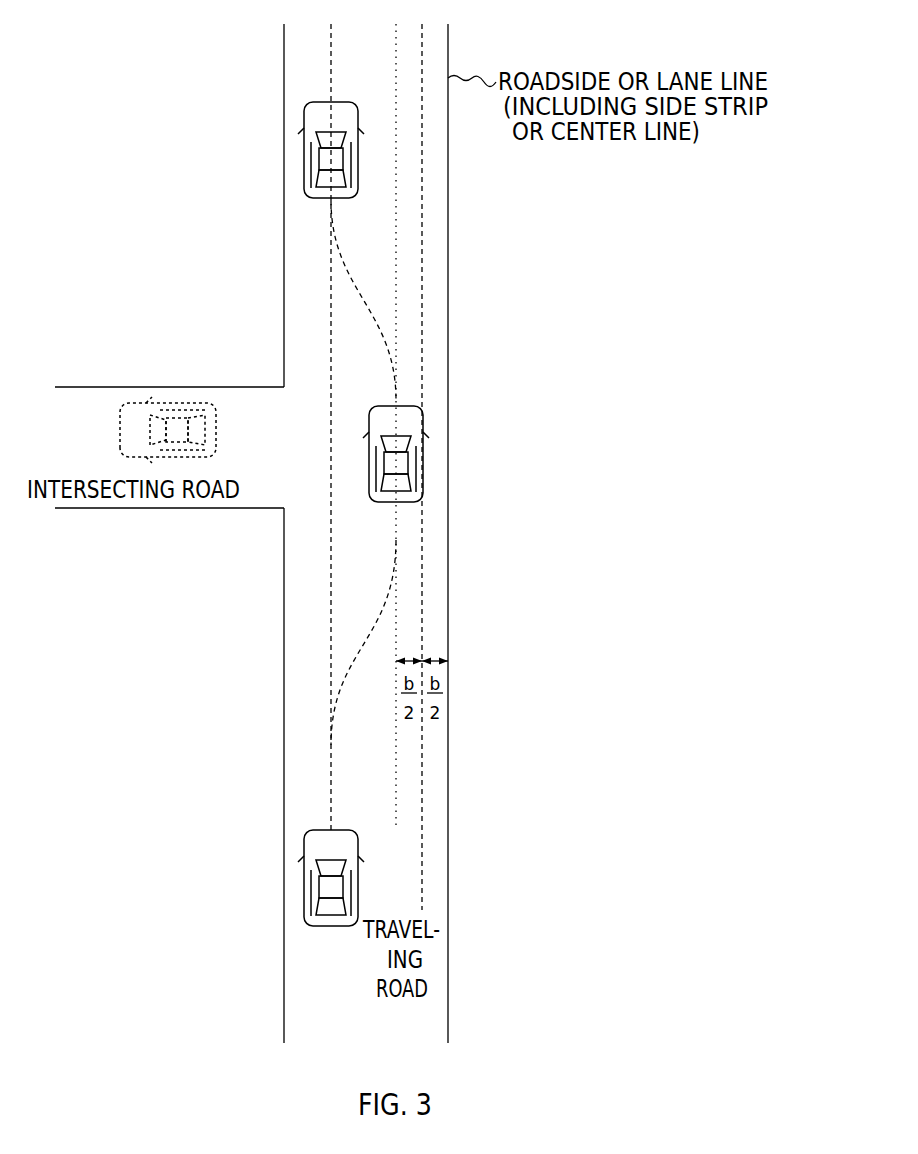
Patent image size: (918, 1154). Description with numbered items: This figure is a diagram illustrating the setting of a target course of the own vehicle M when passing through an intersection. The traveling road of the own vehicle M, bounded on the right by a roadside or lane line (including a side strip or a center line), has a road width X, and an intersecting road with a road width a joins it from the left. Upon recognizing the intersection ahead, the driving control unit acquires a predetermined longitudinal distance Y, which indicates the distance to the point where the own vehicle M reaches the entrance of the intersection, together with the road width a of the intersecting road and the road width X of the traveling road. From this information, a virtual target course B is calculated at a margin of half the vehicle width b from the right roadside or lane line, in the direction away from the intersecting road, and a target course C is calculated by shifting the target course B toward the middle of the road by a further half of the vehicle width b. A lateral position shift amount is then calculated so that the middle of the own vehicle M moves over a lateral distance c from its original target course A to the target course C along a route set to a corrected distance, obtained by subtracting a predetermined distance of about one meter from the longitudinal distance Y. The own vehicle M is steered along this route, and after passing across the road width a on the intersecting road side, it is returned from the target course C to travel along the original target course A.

The target course A is at (330, 416).
The virtual target course B is at (421, 456).
The target course C is at (395, 416).
The own vehicle M is at (360, 880).
The road width of the intersecting road a is at (266, 387).
The vehicle width b is at (365, 726).
The lateral distance c is at (331, 783).
The road width of the traveling road X is at (284, 1000).
The predetermined longitudinal distance Y is at (360, 828).